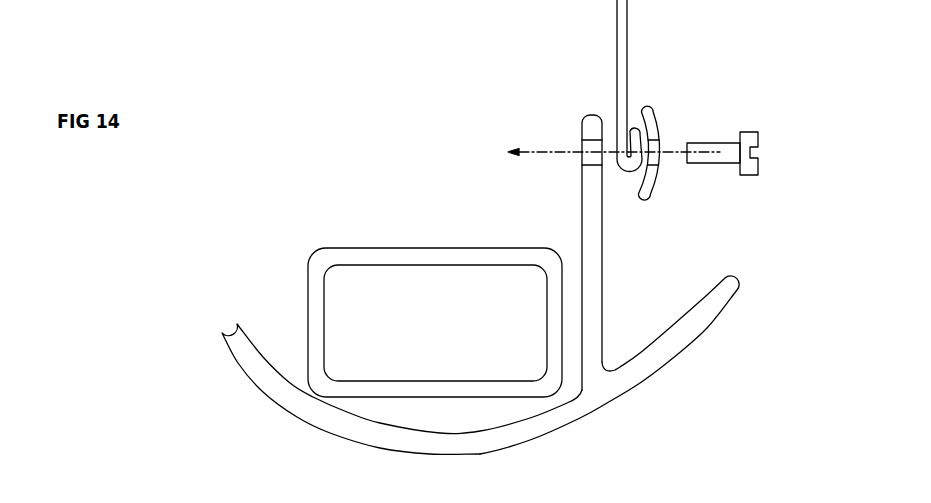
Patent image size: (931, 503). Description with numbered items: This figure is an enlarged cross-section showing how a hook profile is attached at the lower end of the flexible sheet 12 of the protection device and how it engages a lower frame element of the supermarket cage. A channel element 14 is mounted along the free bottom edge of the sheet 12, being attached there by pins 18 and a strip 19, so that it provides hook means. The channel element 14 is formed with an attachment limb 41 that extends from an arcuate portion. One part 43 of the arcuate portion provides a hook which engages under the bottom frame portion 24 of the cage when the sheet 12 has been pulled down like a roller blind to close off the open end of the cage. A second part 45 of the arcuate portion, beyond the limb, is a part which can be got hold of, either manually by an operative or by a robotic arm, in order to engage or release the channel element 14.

The sheet 12 is at (617, 32).
The channel element 14 is at (487, 288).
The pins 18 is at (715, 143).
The strip 19 is at (653, 115).
The bottom frame portion 24 is at (335, 247).
The attachment limb 41 is at (603, 300).
The one part of the arcuate portion 43 is at (300, 418).
The second part of the arcuate portion 45 is at (700, 337).